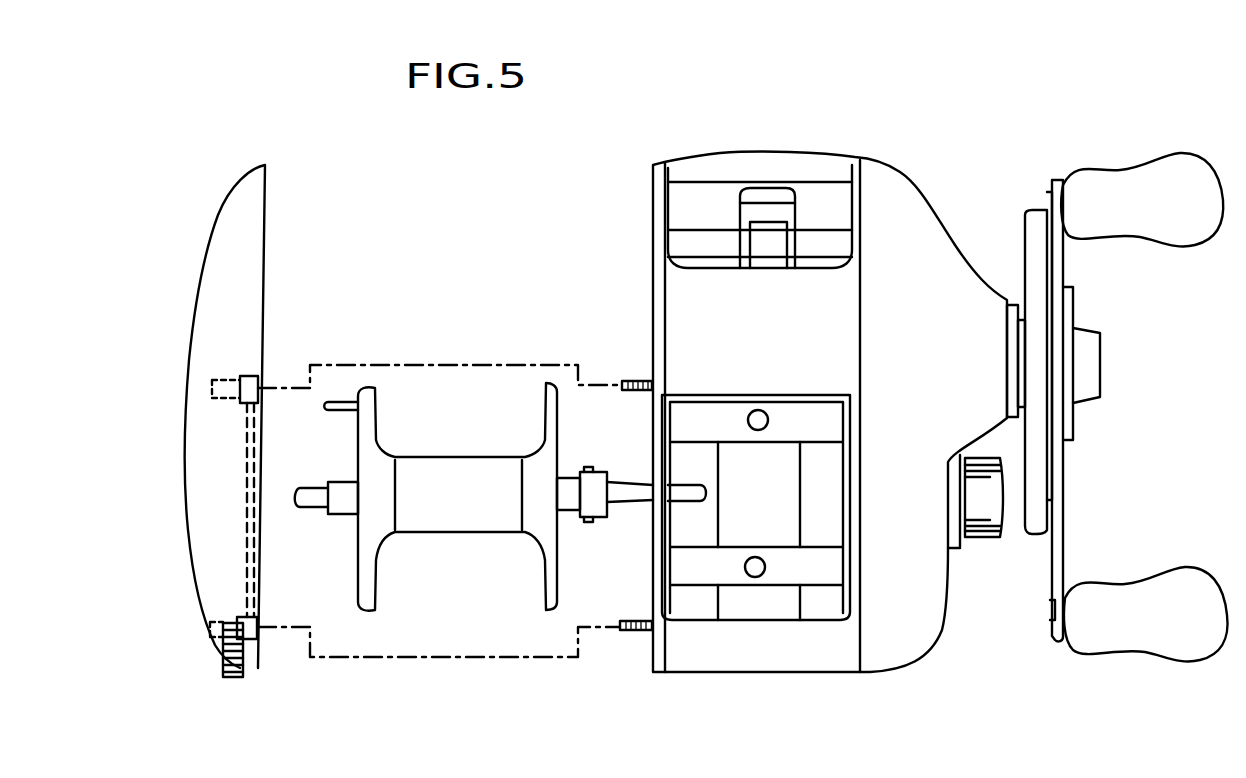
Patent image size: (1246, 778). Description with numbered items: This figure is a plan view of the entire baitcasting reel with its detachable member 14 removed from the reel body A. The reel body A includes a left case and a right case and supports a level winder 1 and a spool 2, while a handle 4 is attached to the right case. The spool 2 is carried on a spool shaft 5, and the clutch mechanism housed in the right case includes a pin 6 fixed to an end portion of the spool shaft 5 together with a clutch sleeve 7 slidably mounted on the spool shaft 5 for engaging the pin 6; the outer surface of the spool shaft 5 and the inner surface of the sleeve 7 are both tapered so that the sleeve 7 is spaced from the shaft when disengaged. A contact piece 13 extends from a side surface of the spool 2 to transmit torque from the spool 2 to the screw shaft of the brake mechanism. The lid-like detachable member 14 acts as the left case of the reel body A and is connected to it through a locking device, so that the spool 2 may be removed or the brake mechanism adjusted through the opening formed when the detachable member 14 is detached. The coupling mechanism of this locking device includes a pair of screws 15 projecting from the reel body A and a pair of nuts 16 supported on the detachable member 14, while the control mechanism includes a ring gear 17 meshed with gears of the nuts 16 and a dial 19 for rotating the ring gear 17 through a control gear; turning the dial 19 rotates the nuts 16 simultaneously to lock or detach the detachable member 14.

The level winder 1 is at (792, 190).
The spool 2 is at (466, 457).
The handle 4 is at (1065, 272).
The spool shaft 5 is at (343, 508).
The pin 6 is at (588, 520).
The clutch sleeve 7 is at (604, 517).
The contact piece 13 is at (342, 402).
The detachable member 14 is at (208, 283).
The screws 15 is at (630, 381).
The nuts 16 is at (258, 380).
The ring gear 17 is at (247, 505).
The dial 19 is at (222, 672).
The reel body A is at (924, 197).